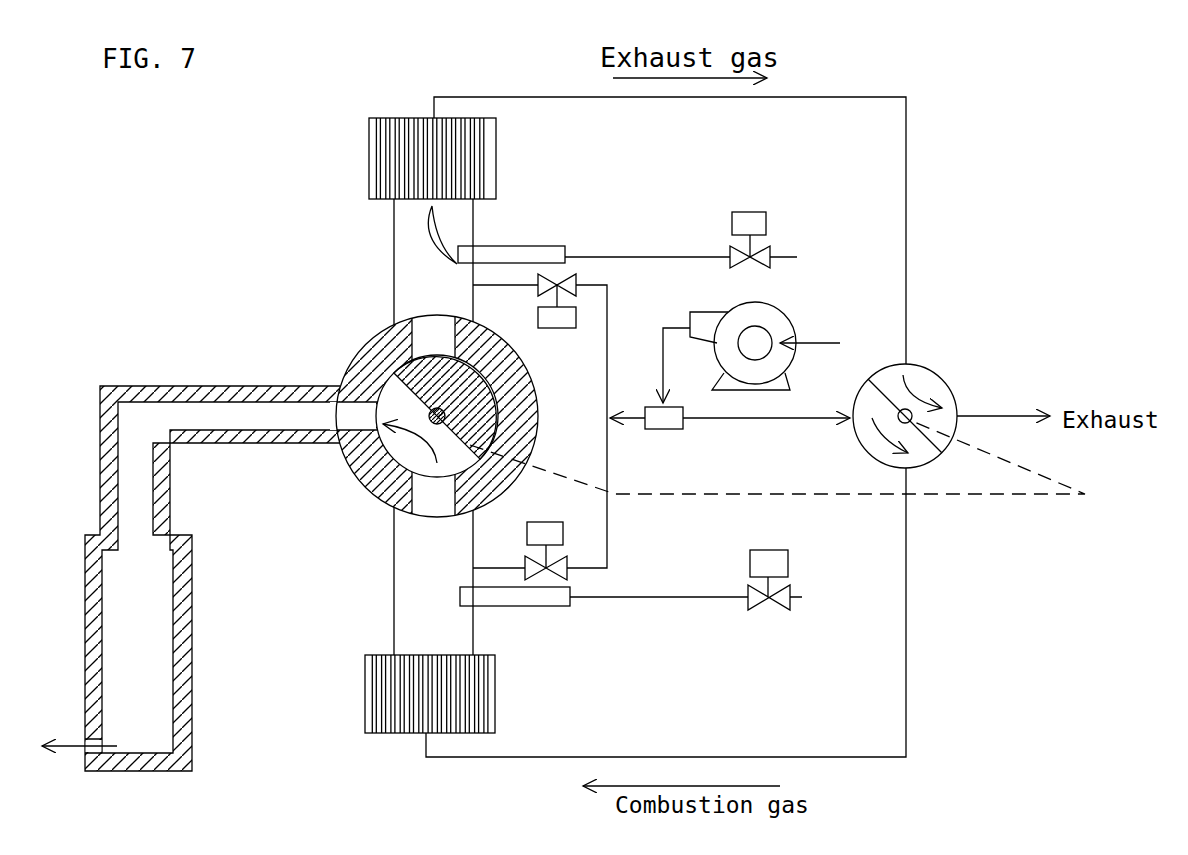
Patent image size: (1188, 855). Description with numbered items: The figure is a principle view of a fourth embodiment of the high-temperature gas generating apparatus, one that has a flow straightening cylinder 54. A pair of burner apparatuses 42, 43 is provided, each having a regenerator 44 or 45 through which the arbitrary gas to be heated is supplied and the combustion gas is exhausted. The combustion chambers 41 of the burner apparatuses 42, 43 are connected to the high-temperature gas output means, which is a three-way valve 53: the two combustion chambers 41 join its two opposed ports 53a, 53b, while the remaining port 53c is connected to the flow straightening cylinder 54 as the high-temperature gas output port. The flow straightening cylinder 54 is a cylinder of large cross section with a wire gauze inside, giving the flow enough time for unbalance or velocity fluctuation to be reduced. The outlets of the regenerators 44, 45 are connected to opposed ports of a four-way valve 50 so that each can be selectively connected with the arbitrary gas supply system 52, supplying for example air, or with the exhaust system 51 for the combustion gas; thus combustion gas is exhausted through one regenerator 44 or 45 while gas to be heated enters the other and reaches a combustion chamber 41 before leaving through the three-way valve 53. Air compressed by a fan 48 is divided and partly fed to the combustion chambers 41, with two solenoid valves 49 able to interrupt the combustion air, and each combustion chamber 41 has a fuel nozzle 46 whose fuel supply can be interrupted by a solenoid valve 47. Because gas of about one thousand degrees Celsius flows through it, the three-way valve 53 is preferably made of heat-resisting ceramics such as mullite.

The combustion chamber 41 is at (407, 240).
The burner apparatus 42 is at (343, 154).
The burner apparatus 43 is at (370, 696).
The regenerator 44 is at (378, 128).
The regenerator 45 is at (387, 720).
The fuel nozzle 46 is at (520, 248).
The solenoid valve 47 is at (760, 222).
The fan 48 is at (775, 325).
The solenoid valve 49 is at (565, 330).
The four-way valve 50 is at (937, 381).
The exhaust system 51 is at (996, 416).
The arbitrary gas supply system 52 is at (778, 420).
The three-way valve 53 is at (468, 407).
The port 53a is at (432, 330).
The port 53b is at (428, 502).
The port 53c is at (319, 383).
The flow straightening cylinder 54 is at (192, 605).